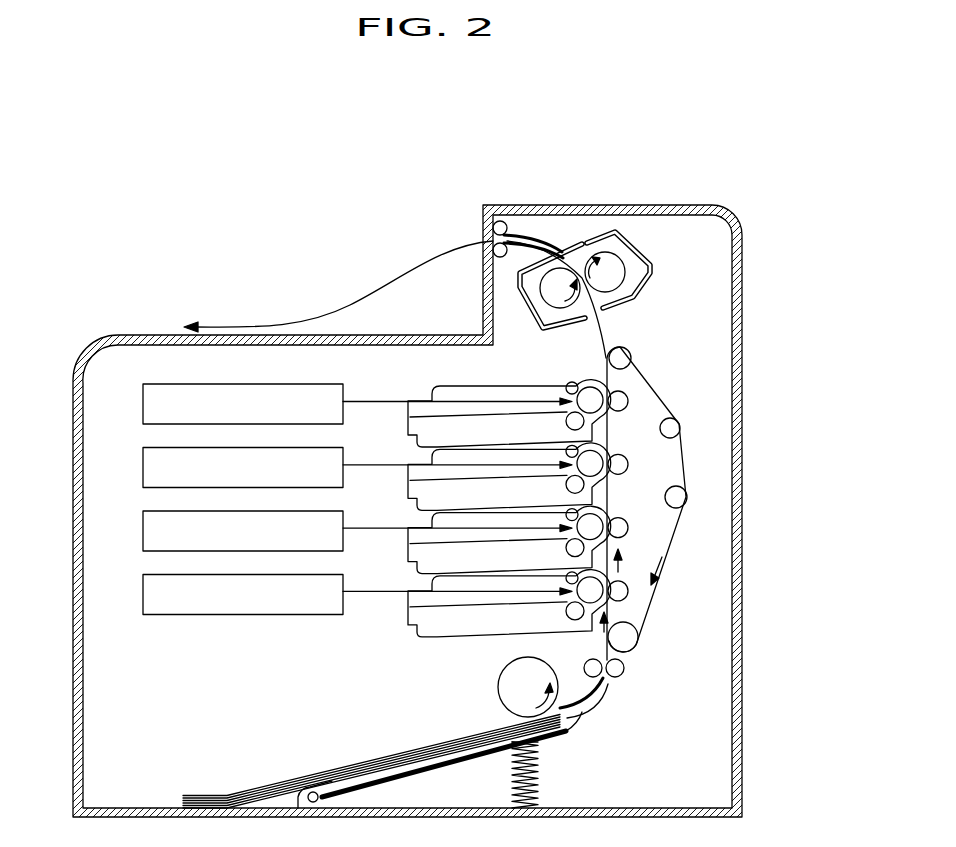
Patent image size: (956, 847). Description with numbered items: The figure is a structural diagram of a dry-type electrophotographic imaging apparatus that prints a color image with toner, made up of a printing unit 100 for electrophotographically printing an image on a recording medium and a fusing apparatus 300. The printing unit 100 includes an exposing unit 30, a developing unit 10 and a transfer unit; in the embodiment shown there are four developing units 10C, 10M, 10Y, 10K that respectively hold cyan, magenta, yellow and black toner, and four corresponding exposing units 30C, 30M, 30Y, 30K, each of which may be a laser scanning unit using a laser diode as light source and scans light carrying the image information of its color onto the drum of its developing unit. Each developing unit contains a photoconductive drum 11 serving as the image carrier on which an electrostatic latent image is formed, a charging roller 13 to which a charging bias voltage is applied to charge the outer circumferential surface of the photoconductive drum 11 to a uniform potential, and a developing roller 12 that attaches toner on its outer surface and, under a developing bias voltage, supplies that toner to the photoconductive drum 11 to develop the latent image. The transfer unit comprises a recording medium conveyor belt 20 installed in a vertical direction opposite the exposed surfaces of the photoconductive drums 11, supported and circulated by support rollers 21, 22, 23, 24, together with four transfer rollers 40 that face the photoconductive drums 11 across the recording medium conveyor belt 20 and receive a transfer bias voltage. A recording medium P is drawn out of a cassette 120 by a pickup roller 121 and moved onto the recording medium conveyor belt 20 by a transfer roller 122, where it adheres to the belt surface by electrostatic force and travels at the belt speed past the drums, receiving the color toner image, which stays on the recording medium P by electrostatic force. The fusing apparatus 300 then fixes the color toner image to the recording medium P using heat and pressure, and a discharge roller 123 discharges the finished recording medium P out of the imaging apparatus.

The printing unit 100 is at (672, 338).
The developing unit 10 is at (486, 467).
The black developing unit 10K is at (486, 392).
The yellow developing unit 10Y is at (422, 430).
The magenta developing unit 10M is at (486, 543).
The cyan developing unit 10C is at (486, 607).
The photoconductive drum 11 is at (584, 389).
The developing roller 12 is at (566, 415).
The charging roller 13 is at (567, 383).
The recording medium conveyor belt 20 is at (658, 395).
The support roller 21 is at (632, 640).
The support roller 22 is at (687, 497).
The support roller 23 is at (680, 428).
The support roller 24 is at (631, 358).
The transfer roller 40 is at (701, 501).
The exposing unit 30 is at (350, 541).
The black exposing unit 30K is at (357, 404).
The yellow exposing unit 30Y is at (357, 468).
The magenta exposing unit 30M is at (357, 531).
The cyan exposing unit 30C is at (357, 595).
The cassette 120 is at (252, 774).
The pickup roller 121 is at (530, 688).
The transfer roller 122 is at (584, 666).
The discharge roller 123 is at (501, 221).
The fusing apparatus 300 is at (676, 271).
The recording medium P is at (392, 752).